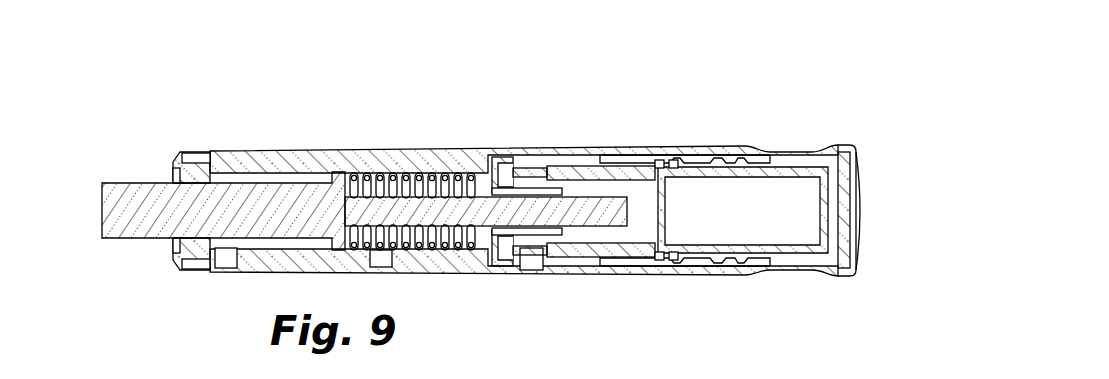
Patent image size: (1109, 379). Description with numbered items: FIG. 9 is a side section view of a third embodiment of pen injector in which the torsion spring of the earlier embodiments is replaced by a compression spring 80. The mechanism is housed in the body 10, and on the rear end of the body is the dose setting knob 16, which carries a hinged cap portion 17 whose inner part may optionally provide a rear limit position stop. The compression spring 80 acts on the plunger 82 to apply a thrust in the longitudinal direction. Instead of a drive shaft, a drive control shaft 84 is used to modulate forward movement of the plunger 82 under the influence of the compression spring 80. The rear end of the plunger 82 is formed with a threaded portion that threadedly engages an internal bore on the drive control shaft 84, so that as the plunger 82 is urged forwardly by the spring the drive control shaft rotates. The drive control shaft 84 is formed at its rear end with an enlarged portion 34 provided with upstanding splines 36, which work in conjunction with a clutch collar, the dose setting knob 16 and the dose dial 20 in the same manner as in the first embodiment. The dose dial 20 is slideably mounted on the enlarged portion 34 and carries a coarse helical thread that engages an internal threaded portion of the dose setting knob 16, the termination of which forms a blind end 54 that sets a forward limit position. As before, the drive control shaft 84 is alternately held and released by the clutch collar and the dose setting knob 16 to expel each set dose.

The body 10 is at (452, 149).
The dose setting knob 16 is at (820, 149).
The hinged cap portion 17 is at (863, 200).
The dose dial 20 is at (743, 260).
The enlarged portion 34 is at (730, 175).
The splines 36 is at (667, 170).
The blind end 54 is at (587, 158).
The compression spring 80 is at (440, 250).
The plunger 82 is at (142, 215).
The drive control shaft 84 is at (590, 233).